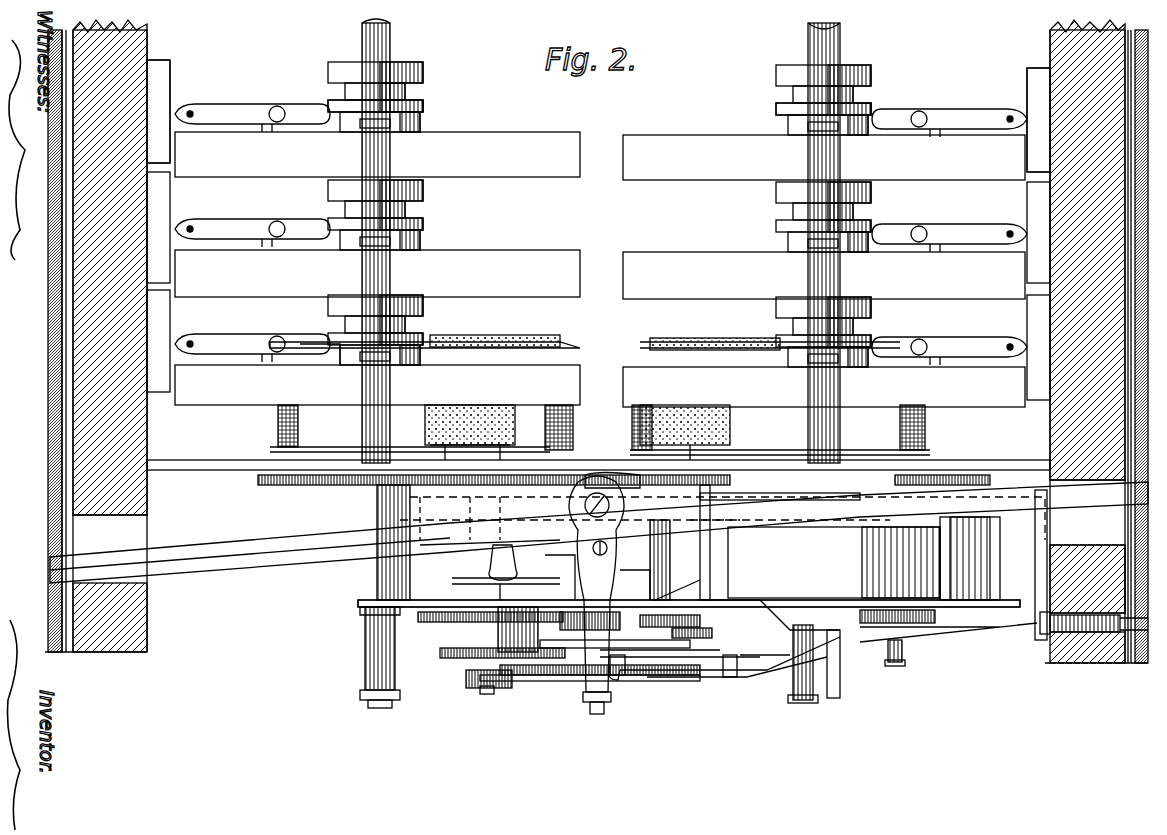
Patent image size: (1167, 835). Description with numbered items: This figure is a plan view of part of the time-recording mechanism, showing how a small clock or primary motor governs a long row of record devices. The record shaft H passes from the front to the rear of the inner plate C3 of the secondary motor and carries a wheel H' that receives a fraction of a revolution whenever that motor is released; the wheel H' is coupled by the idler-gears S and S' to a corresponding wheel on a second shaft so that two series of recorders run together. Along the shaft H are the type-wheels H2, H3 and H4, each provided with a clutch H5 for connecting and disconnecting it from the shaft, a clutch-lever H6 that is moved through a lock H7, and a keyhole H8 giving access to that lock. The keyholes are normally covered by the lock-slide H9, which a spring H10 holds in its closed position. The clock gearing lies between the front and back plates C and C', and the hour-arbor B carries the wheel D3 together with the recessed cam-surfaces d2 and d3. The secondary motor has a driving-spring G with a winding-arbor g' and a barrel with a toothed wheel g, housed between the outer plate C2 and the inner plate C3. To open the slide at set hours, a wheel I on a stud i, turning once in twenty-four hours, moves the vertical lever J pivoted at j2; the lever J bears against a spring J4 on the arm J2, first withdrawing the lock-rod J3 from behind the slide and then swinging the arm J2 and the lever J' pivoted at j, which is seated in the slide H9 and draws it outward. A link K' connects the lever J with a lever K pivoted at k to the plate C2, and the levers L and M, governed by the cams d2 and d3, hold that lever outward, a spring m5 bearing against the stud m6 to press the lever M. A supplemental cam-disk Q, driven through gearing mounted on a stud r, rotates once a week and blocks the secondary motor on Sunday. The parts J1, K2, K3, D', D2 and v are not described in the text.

The shaft H is at (395, 241).
The wheel H' is at (857, 247).
The type-wheel H2 is at (600, 386).
The type-wheel H3 is at (600, 274).
The type-wheel H4 is at (600, 156).
The clutch H5 is at (420, 110).
The clutch-lever H6 is at (236, 110).
The lock H7 is at (160, 68).
The keyhole H8 is at (468, 585).
The lock-slide H9 is at (1140, 444).
The spring H10 is at (1110, 565).
The front plate C is at (665, 654).
The back plate C' is at (722, 517).
The outer plate C2 is at (950, 600).
The inner plate C3 is at (985, 454).
The idler-gear S is at (787, 465).
The idler-gear S' is at (494, 491).
The vertical lever J is at (525, 520).
The lever J' is at (599, 532).
The lever arm J1 is at (790, 522).
The arm J2 is at (570, 568).
The lock-rod J3 is at (1010, 630).
The spring J4 is at (1045, 640).
The toothed wheel g is at (780, 510).
The winding-arbor g' is at (836, 678).
The driving-spring G is at (864, 558).
The lever L is at (545, 695).
The lever M is at (790, 655).
The arbor B is at (597, 712).
The link K' is at (721, 663).
The pinion K2 is at (475, 685).
The rack K3 is at (535, 680).
The gear wheel D' is at (491, 633).
The toothed bar D2 is at (500, 655).
The wheel D3 is at (650, 605).
The cam-surface d2 is at (660, 625).
The cam-surface d3 is at (591, 611).
The supplemental cam-disk Q is at (560, 695).
The stud r is at (486, 690).
The wheel I is at (720, 655).
The stud i is at (700, 648).
The pivot j is at (1130, 626).
The pivot j2 is at (728, 660).
The pivot k is at (897, 662).
The spring m5 is at (770, 660).
The stud m6 is at (800, 700).
The pawl v is at (685, 630).